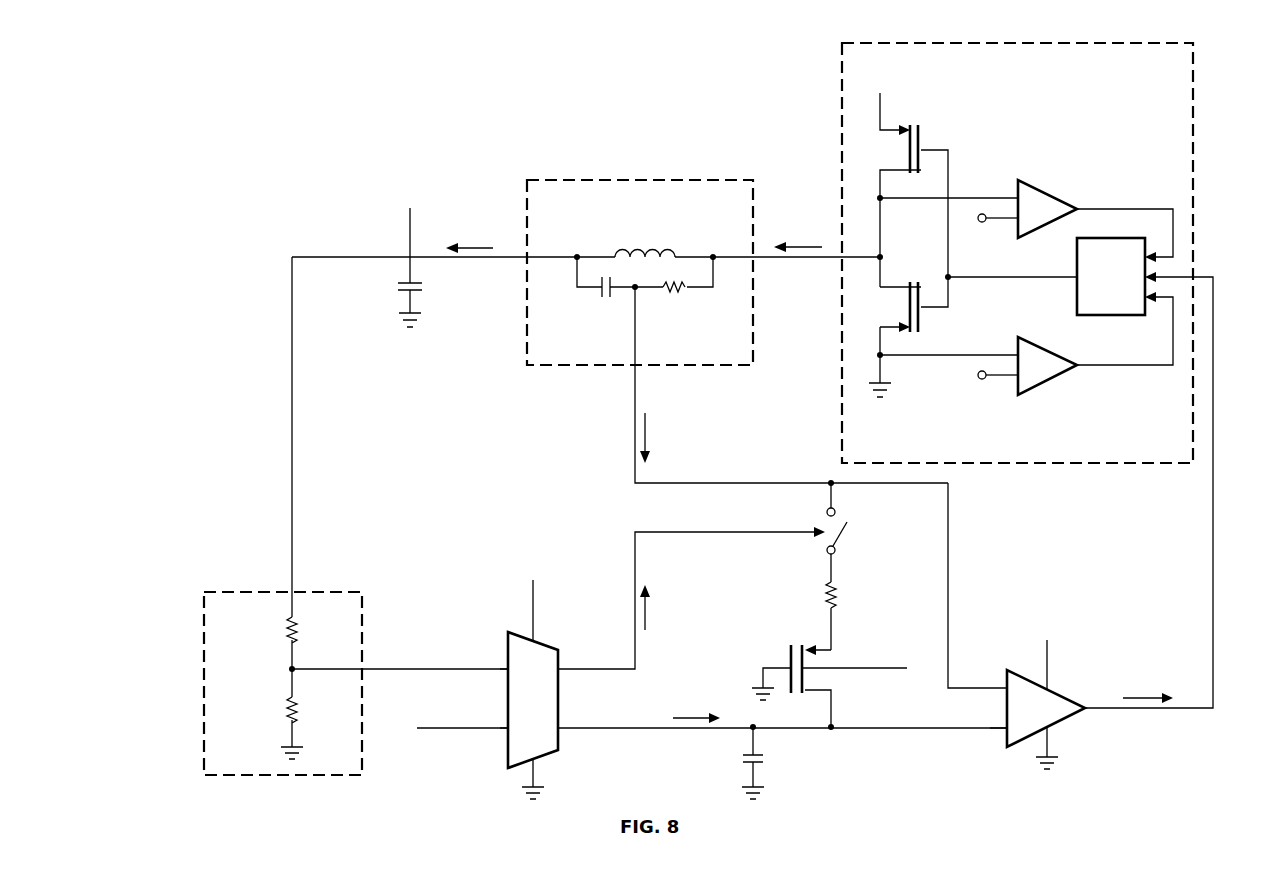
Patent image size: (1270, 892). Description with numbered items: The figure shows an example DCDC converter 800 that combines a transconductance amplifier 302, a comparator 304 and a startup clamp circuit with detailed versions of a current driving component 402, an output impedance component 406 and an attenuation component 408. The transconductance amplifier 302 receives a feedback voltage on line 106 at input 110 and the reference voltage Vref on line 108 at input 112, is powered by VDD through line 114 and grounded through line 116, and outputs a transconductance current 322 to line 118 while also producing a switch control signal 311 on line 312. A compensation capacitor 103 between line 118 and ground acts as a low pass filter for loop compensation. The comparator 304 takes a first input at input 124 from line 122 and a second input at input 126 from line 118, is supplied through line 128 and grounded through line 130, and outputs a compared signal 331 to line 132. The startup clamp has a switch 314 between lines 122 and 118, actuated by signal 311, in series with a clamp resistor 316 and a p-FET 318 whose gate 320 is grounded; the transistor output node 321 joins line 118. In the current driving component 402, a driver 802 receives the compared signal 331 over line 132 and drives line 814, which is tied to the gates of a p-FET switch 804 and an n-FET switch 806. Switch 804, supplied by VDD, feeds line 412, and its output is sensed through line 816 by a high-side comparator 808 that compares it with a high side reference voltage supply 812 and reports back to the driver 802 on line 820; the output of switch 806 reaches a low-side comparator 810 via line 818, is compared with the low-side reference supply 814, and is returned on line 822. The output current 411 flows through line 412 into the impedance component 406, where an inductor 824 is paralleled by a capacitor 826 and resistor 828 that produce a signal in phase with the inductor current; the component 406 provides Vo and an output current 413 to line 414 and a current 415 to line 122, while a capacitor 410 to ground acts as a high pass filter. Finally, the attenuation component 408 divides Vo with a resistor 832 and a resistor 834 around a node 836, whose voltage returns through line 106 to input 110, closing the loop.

The DCDC converter 800 is at (316, 95).
The driver 802 is at (1111, 276).
The switch 804 is at (920, 133).
The switch 806 is at (920, 325).
The high-side comparator 808 is at (1048, 195).
The low-side comparator 810 is at (1048, 381).
The high side reference voltage supply 812 is at (1000, 222).
The line 814 is at (1030, 279).
The line 816 is at (978, 196).
The line 818 is at (940, 357).
The line 820 is at (1140, 208).
The line 822 is at (1135, 367).
The inductor 824 is at (638, 240).
The capacitor 826 is at (607, 300).
The resistor 828 is at (675, 295).
The resistor 832 is at (288, 627).
The resistor 834 is at (290, 705).
The node 836 is at (297, 673).
The current driving component 402 is at (1054, 253).
The output impedance component 406 is at (640, 245).
The attenuation component 408 is at (246, 683).
The capacitor 410 is at (398, 286).
The output current 411 is at (798, 247).
The line 412 is at (795, 260).
The output current 413 is at (476, 247).
The line 414 is at (288, 393).
The current 415 is at (648, 435).
The line 122 is at (633, 383).
The transconductance amplifier 302 is at (548, 642).
The comparator 304 is at (1020, 745).
The line 106 is at (430, 667).
The line 108 is at (445, 732).
The input 110 is at (503, 665).
The input 112 is at (503, 732).
The line 114 is at (532, 600).
The line 116 is at (537, 775).
The switch control signal 311 is at (648, 610).
The line 312 is at (633, 548).
The switch 314 is at (847, 535).
The clamp resistor 316 is at (827, 595).
The p-FET 318 is at (835, 660).
The gate 320 is at (788, 655).
The transistor output node 321 is at (860, 672).
The transconductance current 322 is at (690, 717).
The compensation capacitor 103 is at (767, 758).
The line 118 is at (870, 730).
The input 124 is at (1003, 685).
The input 126 is at (1003, 733).
The line 128 is at (1050, 672).
The line 130 is at (1052, 748).
The line 132 is at (1195, 710).
The compared signal 331 is at (1145, 697).